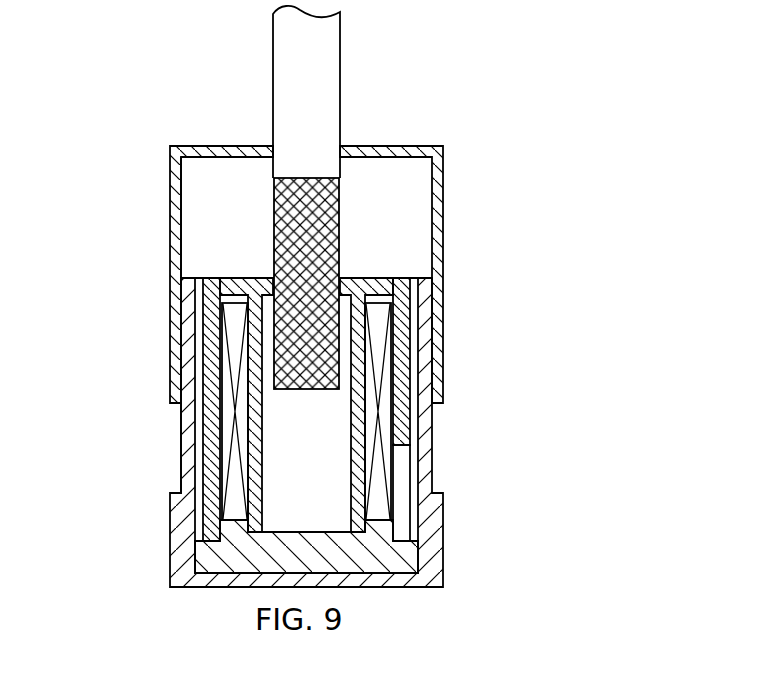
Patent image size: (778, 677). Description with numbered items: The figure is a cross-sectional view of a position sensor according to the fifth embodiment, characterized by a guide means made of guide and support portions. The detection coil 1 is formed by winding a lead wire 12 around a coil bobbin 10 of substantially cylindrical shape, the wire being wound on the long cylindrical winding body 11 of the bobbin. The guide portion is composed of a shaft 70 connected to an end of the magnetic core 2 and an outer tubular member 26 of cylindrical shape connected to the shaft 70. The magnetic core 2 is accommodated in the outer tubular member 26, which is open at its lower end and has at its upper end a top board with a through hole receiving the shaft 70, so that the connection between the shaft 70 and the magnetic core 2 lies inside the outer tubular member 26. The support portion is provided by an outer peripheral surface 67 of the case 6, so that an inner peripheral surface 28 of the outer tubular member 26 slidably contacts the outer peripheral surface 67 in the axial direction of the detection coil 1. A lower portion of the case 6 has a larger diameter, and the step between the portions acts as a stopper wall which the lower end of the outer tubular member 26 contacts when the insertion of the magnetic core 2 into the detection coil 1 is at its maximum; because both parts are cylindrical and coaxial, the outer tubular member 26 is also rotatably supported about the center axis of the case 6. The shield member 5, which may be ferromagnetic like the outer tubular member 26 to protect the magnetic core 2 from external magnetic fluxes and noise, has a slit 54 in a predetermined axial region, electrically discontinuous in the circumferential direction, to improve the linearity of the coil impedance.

The shaft 70 is at (322, 95).
The outer tubular member 26 is at (175, 270).
The inner peripheral surface 28 is at (186, 222).
The magnetic core 2 is at (310, 237).
The case 6 is at (188, 432).
The outer peripheral surface 67 is at (183, 472).
The coil bobbin 10 is at (243, 530).
The detection coil 1 is at (217, 368).
The shield member 5 is at (397, 362).
The slit 54 is at (403, 518).
The winding body 11 is at (357, 437).
The lead wire 12 is at (380, 482).